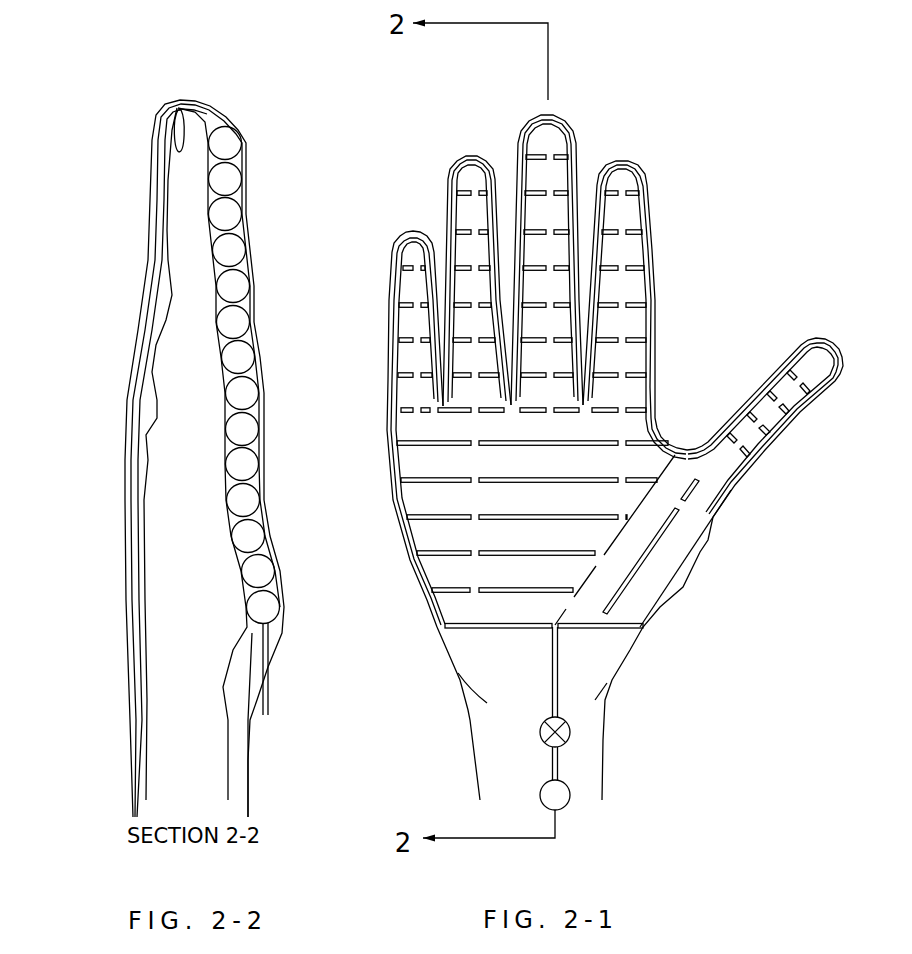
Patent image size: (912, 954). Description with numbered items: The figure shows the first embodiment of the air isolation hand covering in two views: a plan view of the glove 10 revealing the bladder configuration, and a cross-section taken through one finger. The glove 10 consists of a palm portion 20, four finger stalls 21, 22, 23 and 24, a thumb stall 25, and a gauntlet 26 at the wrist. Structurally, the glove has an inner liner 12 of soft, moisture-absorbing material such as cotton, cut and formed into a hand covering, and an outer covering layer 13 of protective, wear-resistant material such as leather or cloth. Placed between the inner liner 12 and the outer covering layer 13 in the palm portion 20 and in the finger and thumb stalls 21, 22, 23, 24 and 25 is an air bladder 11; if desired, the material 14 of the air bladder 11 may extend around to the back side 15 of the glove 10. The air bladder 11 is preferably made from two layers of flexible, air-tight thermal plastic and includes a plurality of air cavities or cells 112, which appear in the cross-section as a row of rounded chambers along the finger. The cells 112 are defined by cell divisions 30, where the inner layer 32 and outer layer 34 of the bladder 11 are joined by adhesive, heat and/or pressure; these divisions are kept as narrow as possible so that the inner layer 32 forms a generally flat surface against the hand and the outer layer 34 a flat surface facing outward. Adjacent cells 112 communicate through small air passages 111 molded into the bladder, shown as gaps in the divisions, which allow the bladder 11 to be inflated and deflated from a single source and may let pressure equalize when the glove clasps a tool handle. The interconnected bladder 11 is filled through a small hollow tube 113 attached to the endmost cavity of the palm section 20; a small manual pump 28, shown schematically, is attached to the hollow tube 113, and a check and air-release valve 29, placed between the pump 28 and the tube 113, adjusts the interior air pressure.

In FIG. 2-2, the glove 10 is at (113, 196).
In FIG. 2-1, the glove 10 is at (690, 299).
In FIG. 2-2, the air bladder 11 is at (243, 160).
In FIG. 2-2, the inner liner 12 is at (237, 403).
In FIG. 2-2, the outer covering layer 13 is at (260, 447).
In FIG. 2-2, the material of the air bladder 14 is at (225, 110).
In FIG. 2-2, the back side of the glove 15 is at (130, 375).
In FIG. 2-1, the palm portion 20 is at (568, 500).
In FIG. 2-1, the finger stall 21 is at (412, 243).
In FIG. 2-1, the finger stall 22 is at (468, 176).
In FIG. 2-1, the finger stall 23 is at (535, 125).
In FIG. 2-1, the finger stall 24 is at (624, 183).
In FIG. 2-1, the thumb stall 25 is at (798, 384).
In FIG. 2-2, the gauntlet 26 is at (253, 777).
In FIG. 2-1, the gauntlet 26 is at (575, 685).
In FIG. 2-1, the small manual pump 28 is at (573, 795).
In FIG. 2-1, the check and air-release valve 29 is at (572, 735).
In FIG. 2-2, the cell divisions 30 is at (270, 568).
In FIG. 2-1, the cell divisions 30 is at (760, 463).
In FIG. 2-2, the inner layer 32 is at (243, 550).
In FIG. 2-2, the outer layer 34 is at (260, 483).
In FIG. 2-2, the air passages 111 is at (237, 340).
In FIG. 2-1, the air passages 111 is at (473, 522).
In FIG. 2-2, the air cavities or cells 112 is at (227, 217).
In FIG. 2-1, the air cavities or cells 112 is at (460, 463).
In FIG. 2-2, the small hollow tube 113 is at (273, 702).
In FIG. 2-1, the small hollow tube 113 is at (548, 672).